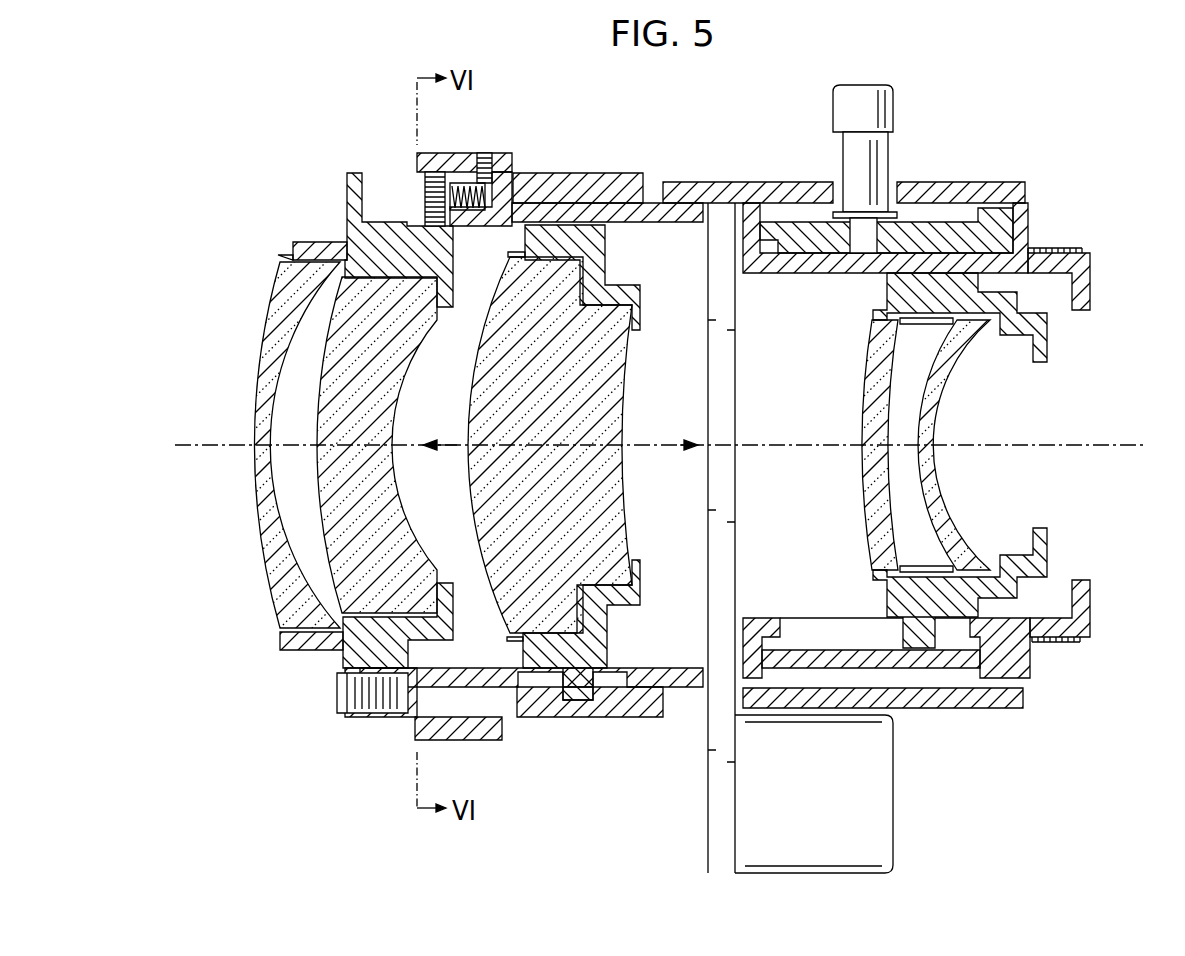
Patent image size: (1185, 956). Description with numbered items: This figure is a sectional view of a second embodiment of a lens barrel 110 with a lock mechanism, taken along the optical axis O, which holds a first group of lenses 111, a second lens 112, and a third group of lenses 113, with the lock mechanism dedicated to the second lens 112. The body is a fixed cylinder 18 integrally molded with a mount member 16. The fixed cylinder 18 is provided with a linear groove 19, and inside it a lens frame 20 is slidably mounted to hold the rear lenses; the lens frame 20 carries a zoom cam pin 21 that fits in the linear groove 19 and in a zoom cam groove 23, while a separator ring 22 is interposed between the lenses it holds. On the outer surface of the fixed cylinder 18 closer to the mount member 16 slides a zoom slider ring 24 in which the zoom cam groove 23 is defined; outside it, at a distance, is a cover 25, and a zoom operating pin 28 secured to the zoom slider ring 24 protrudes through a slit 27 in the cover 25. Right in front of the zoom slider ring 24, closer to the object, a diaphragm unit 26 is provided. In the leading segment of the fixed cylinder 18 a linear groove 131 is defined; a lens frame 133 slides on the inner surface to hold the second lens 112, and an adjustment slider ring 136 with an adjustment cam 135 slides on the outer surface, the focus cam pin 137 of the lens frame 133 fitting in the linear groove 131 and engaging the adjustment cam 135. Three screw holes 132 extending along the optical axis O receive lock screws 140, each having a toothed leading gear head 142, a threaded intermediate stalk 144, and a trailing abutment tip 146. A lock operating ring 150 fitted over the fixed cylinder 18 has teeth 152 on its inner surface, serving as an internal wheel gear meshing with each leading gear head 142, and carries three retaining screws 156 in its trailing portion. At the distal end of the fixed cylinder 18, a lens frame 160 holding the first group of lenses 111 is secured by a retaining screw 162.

The optical axis O is at (222, 441).
The mount member 16 is at (1090, 280).
The fixed cylinder 18 is at (655, 200).
The linear groove 19 is at (817, 625).
The lens frame 20 is at (1047, 558).
The zoom cam pin 21 is at (918, 632).
The separator ring 22 is at (905, 562).
The zoom cam groove 23 is at (867, 647).
The zoom slider ring 24 is at (930, 240).
The cover 25 is at (973, 702).
The diaphragm unit 26 is at (878, 800).
The slit 27 is at (838, 188).
The zoom operating pin 28 is at (868, 93).
The lens barrel with lock mechanism 110 is at (735, 149).
The first group of lenses 111 is at (367, 357).
The second lens 112 is at (620, 375).
The third group of lenses 113 is at (877, 405).
The linear groove 131 is at (535, 684).
The screw holes 132 is at (460, 172).
The lens frame 133 is at (597, 647).
The adjustment cam 135 is at (620, 700).
The adjustment slider ring 136 is at (595, 176).
The focus cam pin 137 is at (578, 692).
The lock screws 140 is at (421, 201).
The toothed leading gear head 142 is at (426, 185).
The threaded intermediate stalk 144 is at (463, 217).
The trailing abutment tip 146 is at (515, 178).
The lock operating ring 150 is at (477, 732).
The teeth 152 is at (422, 172).
The retaining screws 156 is at (486, 155).
The lens frame 160 is at (317, 247).
The retaining screw 162 is at (338, 697).